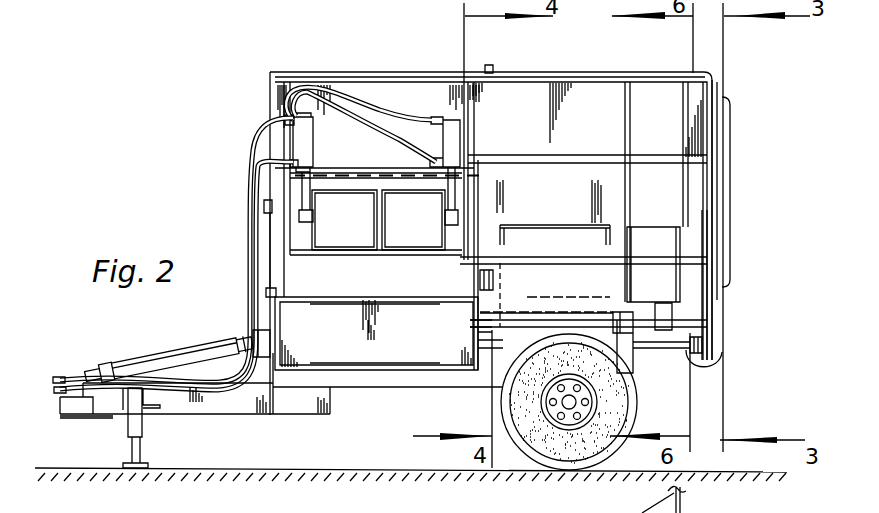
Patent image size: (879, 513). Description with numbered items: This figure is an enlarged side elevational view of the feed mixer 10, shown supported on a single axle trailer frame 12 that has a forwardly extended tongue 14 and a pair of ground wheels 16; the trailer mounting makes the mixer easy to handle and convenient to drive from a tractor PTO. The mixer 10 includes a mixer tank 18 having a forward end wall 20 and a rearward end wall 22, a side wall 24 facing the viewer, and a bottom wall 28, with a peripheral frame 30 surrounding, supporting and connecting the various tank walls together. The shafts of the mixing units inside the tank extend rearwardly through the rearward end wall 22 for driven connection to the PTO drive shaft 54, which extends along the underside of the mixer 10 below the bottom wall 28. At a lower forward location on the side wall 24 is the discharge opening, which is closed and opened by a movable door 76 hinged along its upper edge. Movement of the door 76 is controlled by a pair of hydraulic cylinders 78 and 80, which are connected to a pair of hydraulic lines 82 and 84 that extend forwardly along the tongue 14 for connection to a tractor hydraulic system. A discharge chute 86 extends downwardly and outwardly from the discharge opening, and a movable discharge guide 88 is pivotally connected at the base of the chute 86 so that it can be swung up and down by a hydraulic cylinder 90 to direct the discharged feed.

The feed mixer 10 is at (266, 60).
The trailer frame 12 is at (347, 380).
The tongue 14 is at (302, 405).
The ground wheels 16 is at (637, 403).
The mixer tank 18 is at (589, 67).
The forward end wall 20 is at (270, 78).
The rearward end wall 22 is at (707, 97).
The side wall 24 is at (598, 95).
The bottom wall 28 is at (693, 331).
The peripheral frame 30 is at (505, 73).
The PTO drive shaft 54 is at (722, 358).
The movable door 76 is at (297, 222).
The hydraulic cylinder 78 is at (317, 130).
The hydraulic cylinder 80 is at (447, 140).
The hydraulic line 82 is at (257, 178).
The hydraulic line 84 is at (262, 158).
The discharge chute 86 is at (411, 286).
The movable discharge guide 88 is at (450, 346).
The hydraulic cylinder 90 is at (493, 278).